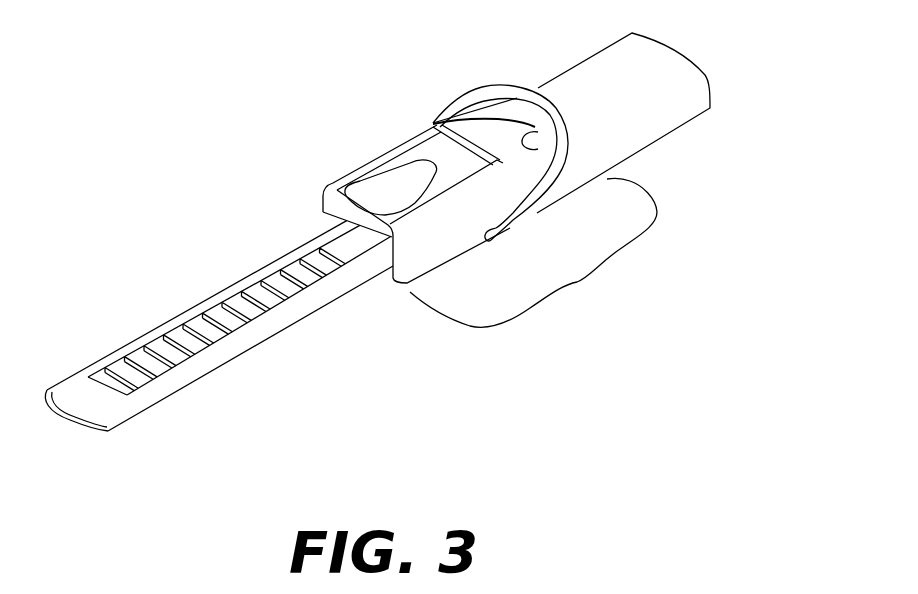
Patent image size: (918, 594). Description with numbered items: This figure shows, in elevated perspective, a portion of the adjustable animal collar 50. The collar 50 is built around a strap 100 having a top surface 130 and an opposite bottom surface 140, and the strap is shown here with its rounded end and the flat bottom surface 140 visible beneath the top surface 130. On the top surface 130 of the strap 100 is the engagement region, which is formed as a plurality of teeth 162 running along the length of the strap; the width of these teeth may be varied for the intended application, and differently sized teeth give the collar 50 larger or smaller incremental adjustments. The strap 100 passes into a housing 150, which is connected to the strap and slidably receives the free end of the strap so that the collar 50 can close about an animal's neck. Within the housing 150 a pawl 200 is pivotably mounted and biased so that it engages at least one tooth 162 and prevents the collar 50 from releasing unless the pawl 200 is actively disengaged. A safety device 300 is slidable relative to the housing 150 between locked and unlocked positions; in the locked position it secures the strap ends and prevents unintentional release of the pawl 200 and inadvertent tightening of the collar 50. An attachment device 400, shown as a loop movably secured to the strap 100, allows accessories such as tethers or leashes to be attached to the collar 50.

The adjustable animal collar 50 is at (300, 162).
The strap 100 is at (433, 360).
The top surface 130 is at (93, 402).
The bottom surface 140 is at (108, 433).
The teeth 162 is at (240, 307).
The pawl 200 is at (417, 161).
The safety device 300 is at (540, 132).
The attachment device 400 is at (462, 97).
The housing 150 is at (577, 282).